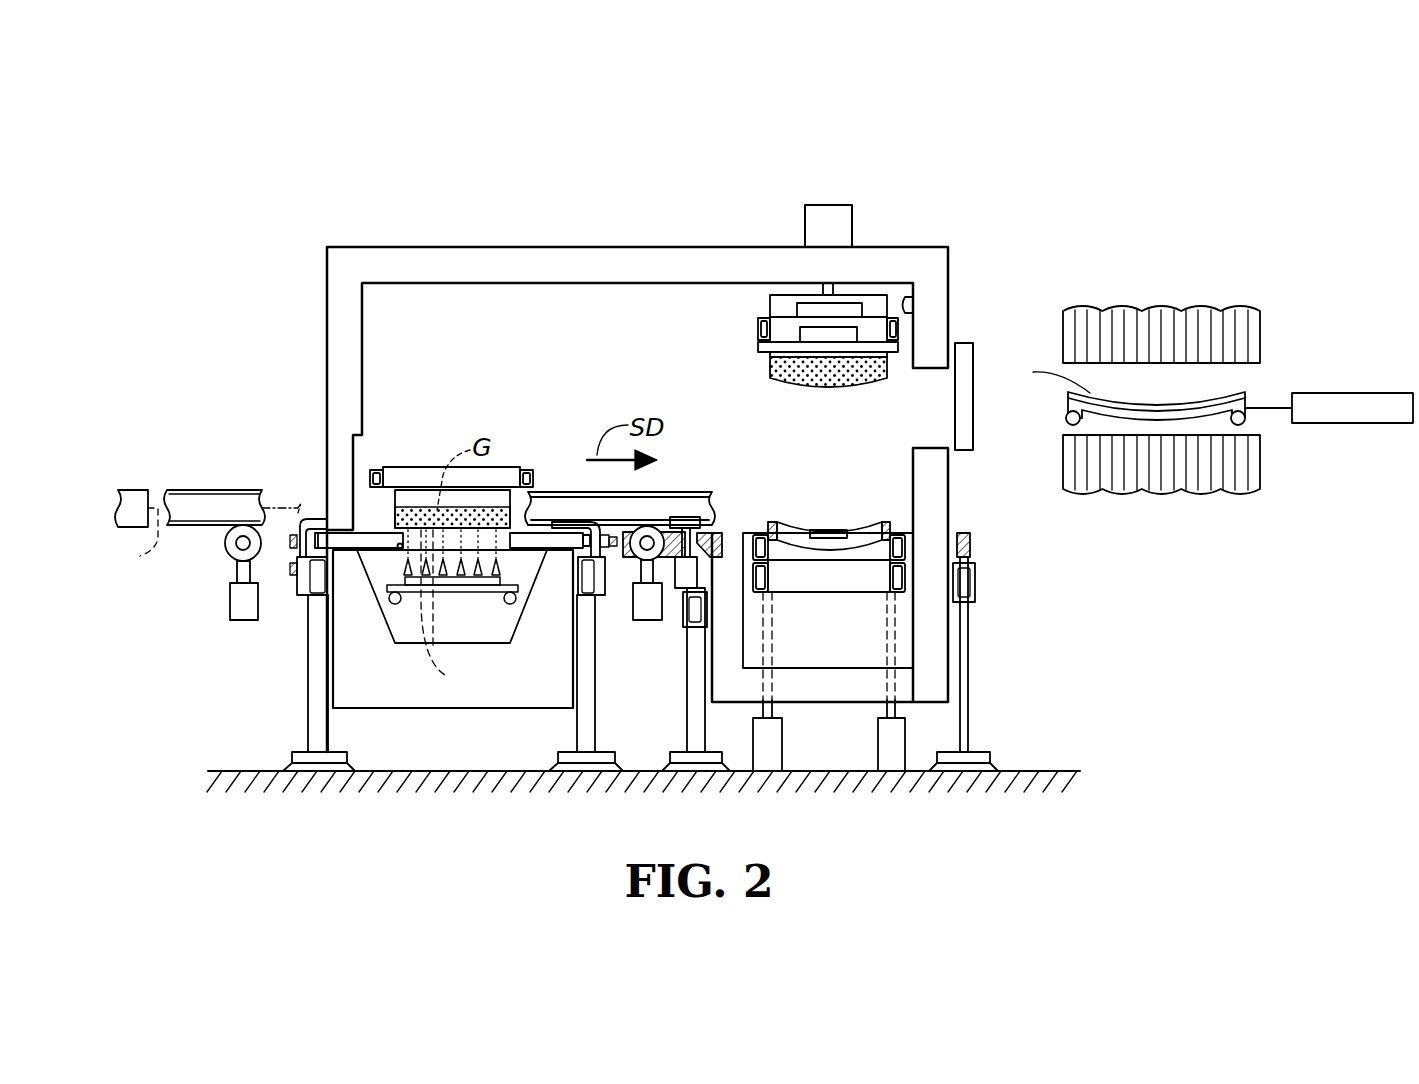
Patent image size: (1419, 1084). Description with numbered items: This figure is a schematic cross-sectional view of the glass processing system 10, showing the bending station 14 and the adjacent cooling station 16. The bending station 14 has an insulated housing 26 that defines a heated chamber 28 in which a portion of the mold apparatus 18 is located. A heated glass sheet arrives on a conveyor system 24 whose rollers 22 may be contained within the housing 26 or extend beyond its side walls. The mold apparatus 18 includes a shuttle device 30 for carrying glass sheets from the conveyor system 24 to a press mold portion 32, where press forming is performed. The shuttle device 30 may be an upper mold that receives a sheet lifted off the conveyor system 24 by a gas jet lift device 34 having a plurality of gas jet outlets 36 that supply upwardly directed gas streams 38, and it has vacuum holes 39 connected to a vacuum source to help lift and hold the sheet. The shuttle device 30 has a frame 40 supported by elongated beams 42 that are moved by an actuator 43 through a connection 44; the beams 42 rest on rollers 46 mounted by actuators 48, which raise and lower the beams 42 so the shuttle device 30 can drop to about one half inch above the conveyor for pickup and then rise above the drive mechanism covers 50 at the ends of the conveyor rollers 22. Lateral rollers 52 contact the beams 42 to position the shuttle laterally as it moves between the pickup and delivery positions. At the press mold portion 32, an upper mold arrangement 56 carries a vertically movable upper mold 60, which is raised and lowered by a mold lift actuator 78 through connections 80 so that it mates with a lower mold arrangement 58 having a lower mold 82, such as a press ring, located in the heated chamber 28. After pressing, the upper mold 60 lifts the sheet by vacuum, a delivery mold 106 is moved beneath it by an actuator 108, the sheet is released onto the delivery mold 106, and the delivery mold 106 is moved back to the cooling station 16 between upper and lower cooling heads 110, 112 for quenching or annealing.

The glass processing system 10 is at (337, 167).
The bending station 14 is at (530, 237).
The cooling station 16 is at (1260, 267).
The mold apparatus 18 is at (692, 318).
The rollers 22 is at (385, 560).
The conveyor system 24 is at (372, 550).
The insulated housing 26 is at (913, 245).
The heated chamber 28 is at (908, 300).
The shuttle device 30 is at (393, 507).
The press mold portion 32 is at (750, 310).
The gas jet lift device 34 is at (510, 573).
The gas jet outlets 36 is at (478, 562).
The gas streams 38 is at (448, 612).
The vacuum holes 39 is at (410, 500).
The frame 40 is at (537, 480).
The elongated beams 42 is at (210, 490).
The actuator 43 is at (133, 490).
The connection 44 is at (138, 557).
The rollers 46 is at (225, 548).
The actuators 48 is at (230, 600).
The drive mechanism covers 50 is at (562, 522).
The lateral rollers 52 is at (682, 518).
The upper mold arrangement 56 is at (752, 370).
The lower mold arrangement 58 is at (787, 517).
The upper mold 60 is at (828, 388).
The mold lift actuator 78 is at (805, 228).
The connections 80 is at (833, 290).
The lower mold 82 is at (883, 522).
The delivery mold 106 is at (1245, 393).
The actuator 108 is at (1348, 393).
The upper cooling head 110 is at (1260, 323).
The lower cooling head 112 is at (1260, 463).